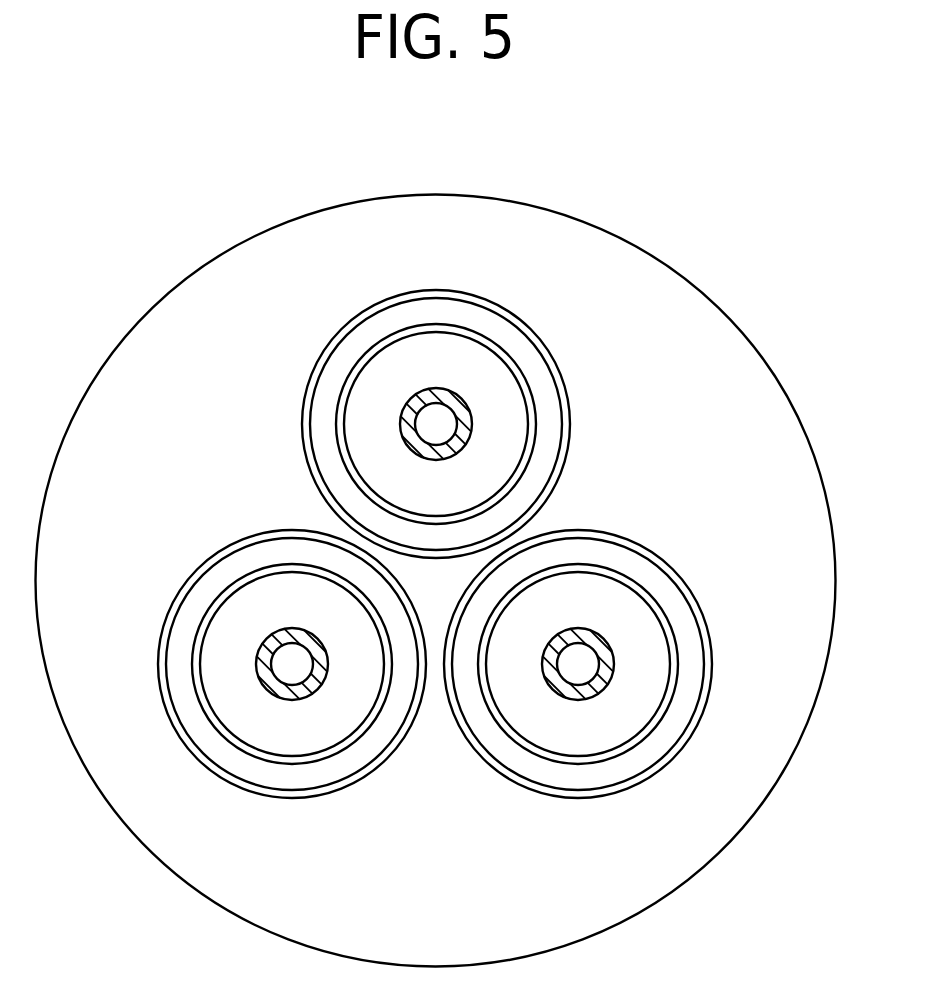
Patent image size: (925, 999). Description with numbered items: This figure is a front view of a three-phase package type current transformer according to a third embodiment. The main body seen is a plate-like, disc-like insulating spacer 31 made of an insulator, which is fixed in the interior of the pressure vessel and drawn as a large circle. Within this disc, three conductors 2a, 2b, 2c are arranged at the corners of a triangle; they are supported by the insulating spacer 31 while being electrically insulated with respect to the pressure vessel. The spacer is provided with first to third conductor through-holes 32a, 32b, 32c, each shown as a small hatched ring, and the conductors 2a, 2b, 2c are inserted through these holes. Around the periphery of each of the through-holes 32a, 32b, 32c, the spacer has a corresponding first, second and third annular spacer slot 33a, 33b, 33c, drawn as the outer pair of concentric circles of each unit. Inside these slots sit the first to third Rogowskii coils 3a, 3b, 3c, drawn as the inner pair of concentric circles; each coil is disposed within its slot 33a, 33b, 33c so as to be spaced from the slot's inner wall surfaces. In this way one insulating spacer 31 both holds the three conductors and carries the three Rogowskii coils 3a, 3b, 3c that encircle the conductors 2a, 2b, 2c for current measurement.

The insulating spacer 31 is at (695, 327).
The first conductor through-hole 32a is at (427, 298).
The second conductor through-hole 32b is at (667, 664).
The third conductor through-hole 32c is at (195, 664).
The first annular spacer slot 33a is at (497, 372).
The second annular spacer slot 33b is at (607, 664).
The third annular spacer slot 33c is at (254, 664).
The conductor 2a is at (524, 400).
The conductor 2b is at (658, 628).
The conductor 2c is at (206, 627).
The first Rogowskii coil 3a is at (496, 424).
The second Rogowskii coil 3b is at (588, 706).
The third Rogowskii coil 3c is at (278, 704).